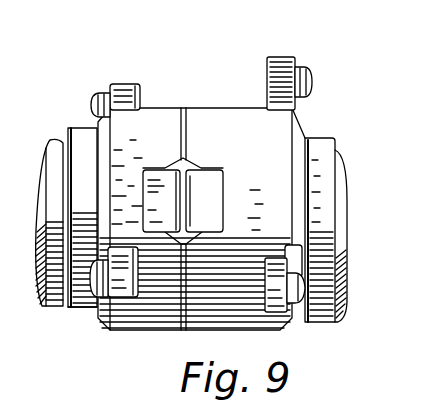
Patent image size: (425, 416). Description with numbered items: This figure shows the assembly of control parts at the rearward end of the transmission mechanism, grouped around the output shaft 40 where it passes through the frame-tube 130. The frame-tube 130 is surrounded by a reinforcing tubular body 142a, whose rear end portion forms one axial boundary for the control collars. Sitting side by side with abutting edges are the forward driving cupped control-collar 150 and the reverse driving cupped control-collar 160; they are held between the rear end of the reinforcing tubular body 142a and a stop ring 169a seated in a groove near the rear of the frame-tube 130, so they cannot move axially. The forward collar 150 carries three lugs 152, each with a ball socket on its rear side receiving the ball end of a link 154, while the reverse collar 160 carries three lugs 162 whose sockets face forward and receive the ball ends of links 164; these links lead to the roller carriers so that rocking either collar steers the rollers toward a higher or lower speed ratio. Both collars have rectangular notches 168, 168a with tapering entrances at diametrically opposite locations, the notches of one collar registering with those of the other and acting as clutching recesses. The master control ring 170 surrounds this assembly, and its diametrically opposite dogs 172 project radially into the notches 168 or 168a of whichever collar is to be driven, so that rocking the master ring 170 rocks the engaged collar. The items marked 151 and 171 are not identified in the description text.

The output shaft 40 is at (50, 140).
The frame-tube 130 is at (40, 280).
The reinforcing tubular body 142a is at (57, 306).
The forward driving control-collar 150 is at (282, 148).
The element 151 is at (44, 412).
The lug 152 is at (280, 70).
The link 154 is at (307, 82).
The reverse driving control-collar 160 is at (151, 110).
The lug 162 is at (122, 90).
The link 164 is at (93, 97).
The rectangular notch 168 is at (220, 195).
The rectangular notch 168a is at (152, 172).
The stop ring 169a is at (308, 165).
The master control ring 170 is at (275, 200).
The element 171 is at (82, 415).
The dog 172 is at (158, 222).